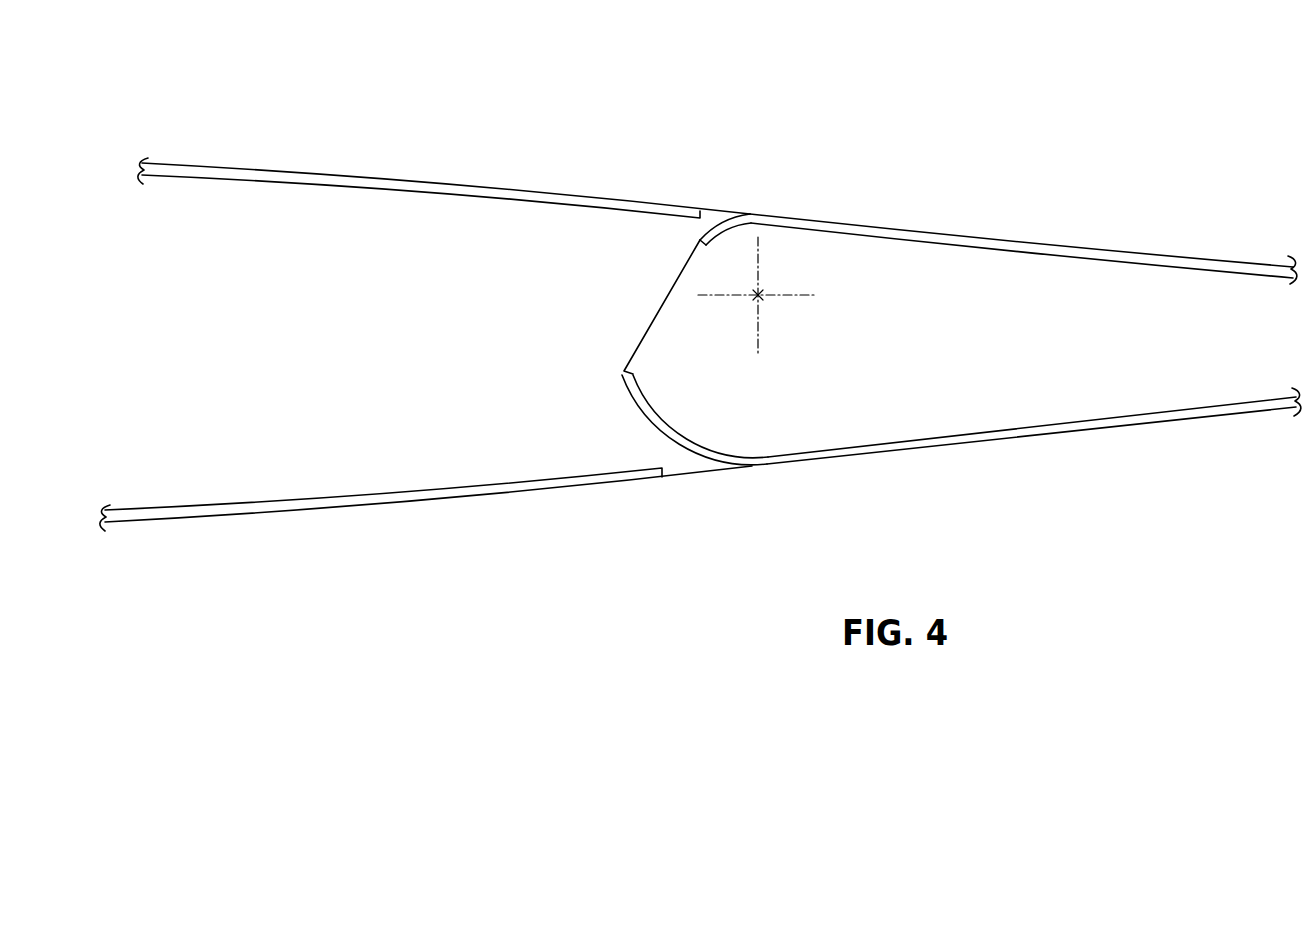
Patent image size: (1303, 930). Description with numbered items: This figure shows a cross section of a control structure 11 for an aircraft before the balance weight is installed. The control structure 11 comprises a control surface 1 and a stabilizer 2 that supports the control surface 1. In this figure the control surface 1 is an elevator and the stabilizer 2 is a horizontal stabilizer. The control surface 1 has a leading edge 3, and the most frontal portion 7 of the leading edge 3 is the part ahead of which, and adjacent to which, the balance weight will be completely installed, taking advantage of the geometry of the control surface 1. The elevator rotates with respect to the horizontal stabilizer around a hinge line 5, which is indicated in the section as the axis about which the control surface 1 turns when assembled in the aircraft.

The control surface 1 is at (1077, 247).
The stabilizer 2 is at (243, 167).
The leading edge 3 is at (707, 455).
The hinge line 5 is at (769, 305).
The most frontal portion 7 is at (621, 390).
The control structure 11 is at (812, 173).